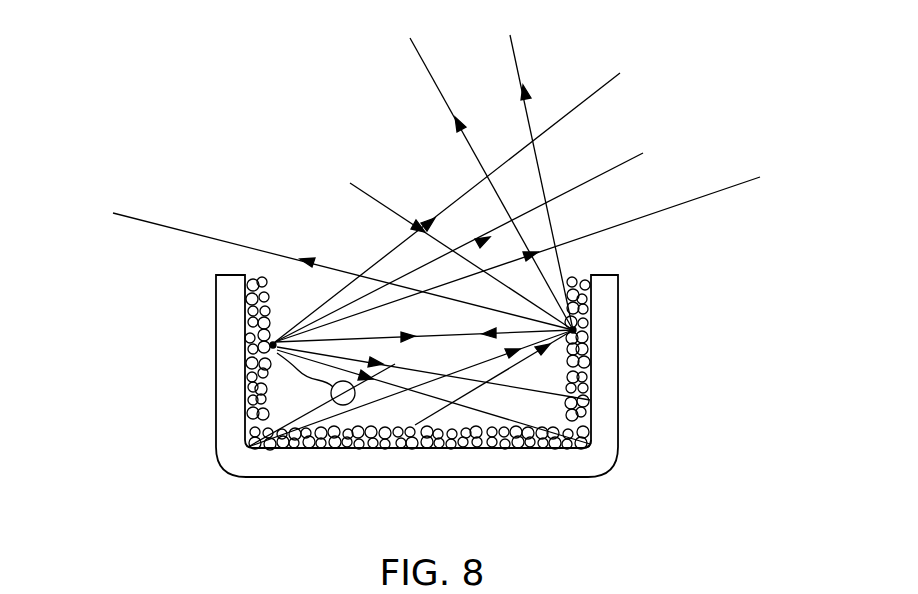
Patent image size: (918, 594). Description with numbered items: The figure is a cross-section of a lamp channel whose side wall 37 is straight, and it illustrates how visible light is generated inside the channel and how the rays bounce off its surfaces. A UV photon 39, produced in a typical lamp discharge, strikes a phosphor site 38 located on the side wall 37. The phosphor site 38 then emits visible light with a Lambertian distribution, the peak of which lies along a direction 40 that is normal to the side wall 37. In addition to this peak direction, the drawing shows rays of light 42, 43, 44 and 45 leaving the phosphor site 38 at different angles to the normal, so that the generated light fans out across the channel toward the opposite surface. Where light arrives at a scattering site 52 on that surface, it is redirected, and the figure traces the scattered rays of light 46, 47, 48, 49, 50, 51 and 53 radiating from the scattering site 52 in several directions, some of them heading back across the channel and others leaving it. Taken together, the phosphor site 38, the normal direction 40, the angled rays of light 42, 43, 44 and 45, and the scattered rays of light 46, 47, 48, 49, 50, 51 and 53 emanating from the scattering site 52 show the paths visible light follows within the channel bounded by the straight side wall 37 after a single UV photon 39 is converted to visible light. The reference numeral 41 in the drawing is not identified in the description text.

The side wall 37 is at (604, 352).
The phosphor site 38 is at (262, 351).
The UV photon 39 is at (256, 446).
The direction normal to the side wall 40 is at (424, 327).
The scattered light ray 41 is at (517, 259).
The ray of light 42 is at (459, 242).
The ray of light 43 is at (447, 206).
The ray of light 44 is at (419, 388).
The ray of light 45 is at (433, 397).
The scattered ray of light 46 is at (343, 269).
The scattered ray of light 47 is at (453, 244).
The scattered ray of light 48 is at (491, 184).
The scattered ray of light 49 is at (541, 182).
The scattered ray of light 50 is at (387, 400).
The scattered ray of light 51 is at (588, 437).
The scattering site 52 is at (578, 328).
The scattered ray of light 53 is at (588, 387).